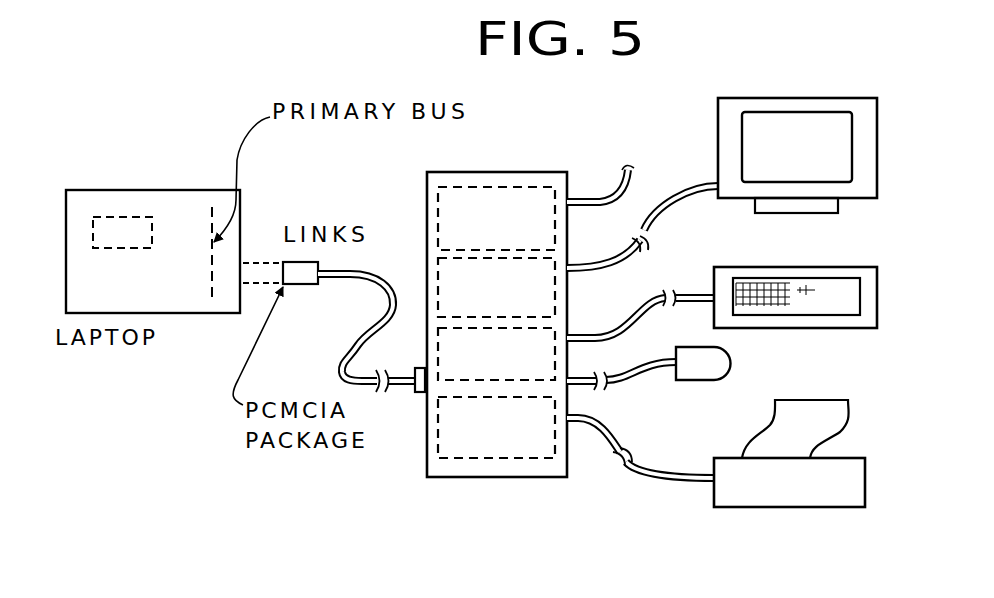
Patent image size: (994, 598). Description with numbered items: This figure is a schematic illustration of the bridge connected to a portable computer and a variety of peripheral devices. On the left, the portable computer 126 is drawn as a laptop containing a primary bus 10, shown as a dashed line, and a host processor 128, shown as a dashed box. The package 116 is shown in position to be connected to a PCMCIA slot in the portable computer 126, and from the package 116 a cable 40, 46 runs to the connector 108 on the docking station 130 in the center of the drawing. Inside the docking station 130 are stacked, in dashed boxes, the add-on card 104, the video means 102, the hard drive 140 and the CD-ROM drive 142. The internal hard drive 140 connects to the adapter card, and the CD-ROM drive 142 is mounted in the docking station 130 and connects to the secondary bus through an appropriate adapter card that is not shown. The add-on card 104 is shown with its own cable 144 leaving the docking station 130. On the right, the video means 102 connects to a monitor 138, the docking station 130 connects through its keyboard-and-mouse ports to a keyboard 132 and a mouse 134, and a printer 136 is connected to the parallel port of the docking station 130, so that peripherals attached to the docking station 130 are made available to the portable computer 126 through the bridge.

The primary bus 10 is at (212, 275).
The portable computer 126 is at (173, 190).
The host processor 128 is at (97, 216).
The package 116 is at (282, 262).
The cable 40 is at (366, 279).
The cable 46 is at (368, 268).
The connector 108 is at (415, 368).
The docking station 130 is at (477, 172).
The add-on card 104 is at (510, 187).
The video means 102 is at (567, 258).
The hard drive 140 is at (567, 330).
The CD-ROM drive 142 is at (443, 424).
The cable 144 is at (602, 195).
The monitor 138 is at (786, 98).
The keyboard 132 is at (806, 267).
The mouse 134 is at (727, 372).
The printer 136 is at (748, 507).